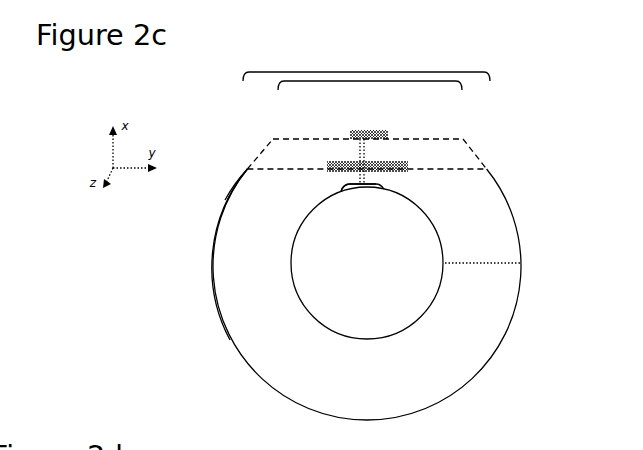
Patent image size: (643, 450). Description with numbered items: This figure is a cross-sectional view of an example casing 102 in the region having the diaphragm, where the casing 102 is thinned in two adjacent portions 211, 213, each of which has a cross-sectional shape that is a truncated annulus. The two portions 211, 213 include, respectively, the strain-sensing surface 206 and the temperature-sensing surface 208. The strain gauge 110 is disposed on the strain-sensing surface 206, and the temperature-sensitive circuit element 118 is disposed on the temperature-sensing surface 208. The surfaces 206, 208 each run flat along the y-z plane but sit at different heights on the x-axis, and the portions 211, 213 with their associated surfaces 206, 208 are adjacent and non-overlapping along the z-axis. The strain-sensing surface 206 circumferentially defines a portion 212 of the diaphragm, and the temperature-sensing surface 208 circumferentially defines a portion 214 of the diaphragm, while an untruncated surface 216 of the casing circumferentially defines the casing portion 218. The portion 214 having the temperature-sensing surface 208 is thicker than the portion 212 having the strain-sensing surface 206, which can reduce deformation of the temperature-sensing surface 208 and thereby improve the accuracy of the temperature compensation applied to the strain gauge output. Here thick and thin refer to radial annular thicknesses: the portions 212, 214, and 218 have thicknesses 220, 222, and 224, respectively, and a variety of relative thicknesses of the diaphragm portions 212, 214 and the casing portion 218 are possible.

The casing 102 is at (524, 226).
The strain gauge 110 is at (351, 167).
The temperature-sensitive circuit element 118 is at (374, 131).
The strain-sensing surface 206 is at (494, 171).
The temperature-sensing surface 208 is at (436, 139).
The portion 211 is at (275, 71).
The portion of the diaphragm 212 is at (330, 180).
The portion 213 is at (417, 80).
The portion of the diaphragm 214 is at (398, 153).
The untruncated surface 216 is at (241, 174).
The casing portion 218 is at (233, 237).
The thickness 220 is at (377, 187).
The thickness 222 is at (345, 190).
The thickness 224 is at (448, 263).